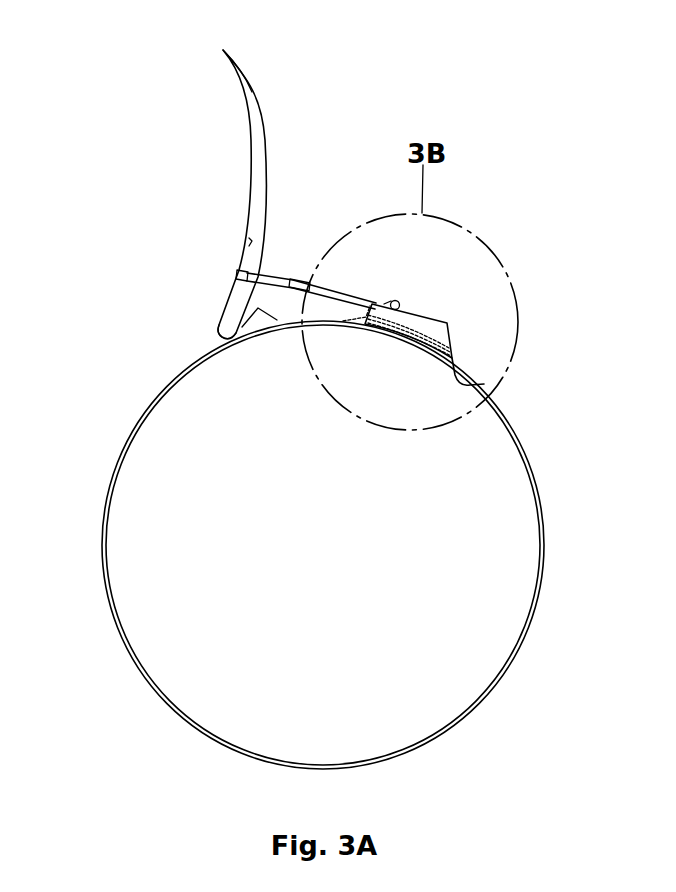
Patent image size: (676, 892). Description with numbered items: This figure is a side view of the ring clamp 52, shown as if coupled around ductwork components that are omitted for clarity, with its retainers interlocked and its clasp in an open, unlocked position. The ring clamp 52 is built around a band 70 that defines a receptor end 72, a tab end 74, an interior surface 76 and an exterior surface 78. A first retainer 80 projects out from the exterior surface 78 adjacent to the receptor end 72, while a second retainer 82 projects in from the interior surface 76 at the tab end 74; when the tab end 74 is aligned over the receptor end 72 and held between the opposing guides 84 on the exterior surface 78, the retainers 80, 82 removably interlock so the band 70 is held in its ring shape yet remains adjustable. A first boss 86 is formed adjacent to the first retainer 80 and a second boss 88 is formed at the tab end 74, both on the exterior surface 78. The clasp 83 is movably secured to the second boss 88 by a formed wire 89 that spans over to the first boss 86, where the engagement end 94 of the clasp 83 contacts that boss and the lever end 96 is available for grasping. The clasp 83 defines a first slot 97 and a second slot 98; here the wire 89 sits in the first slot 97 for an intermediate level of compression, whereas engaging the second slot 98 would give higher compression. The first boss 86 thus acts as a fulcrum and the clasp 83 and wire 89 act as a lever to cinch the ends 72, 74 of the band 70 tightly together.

The band 70 is at (168, 738).
The interior surface 76 is at (498, 670).
The exterior surface 78 is at (545, 565).
The ring clamp 52 is at (161, 301).
The clasp 83 is at (253, 115).
The lever end 96 is at (222, 52).
The second slot 98 is at (250, 243).
The first slot 97 is at (237, 273).
The engagement end 94 is at (221, 334).
The first boss 86 is at (258, 325).
The formed wire 89 is at (296, 279).
The second boss 88 is at (383, 303).
The guides 84 is at (442, 328).
The tab end 74 is at (347, 322).
The second retainer 82 is at (373, 323).
The first retainer 80 is at (384, 318).
The receptor end 72 is at (482, 394).